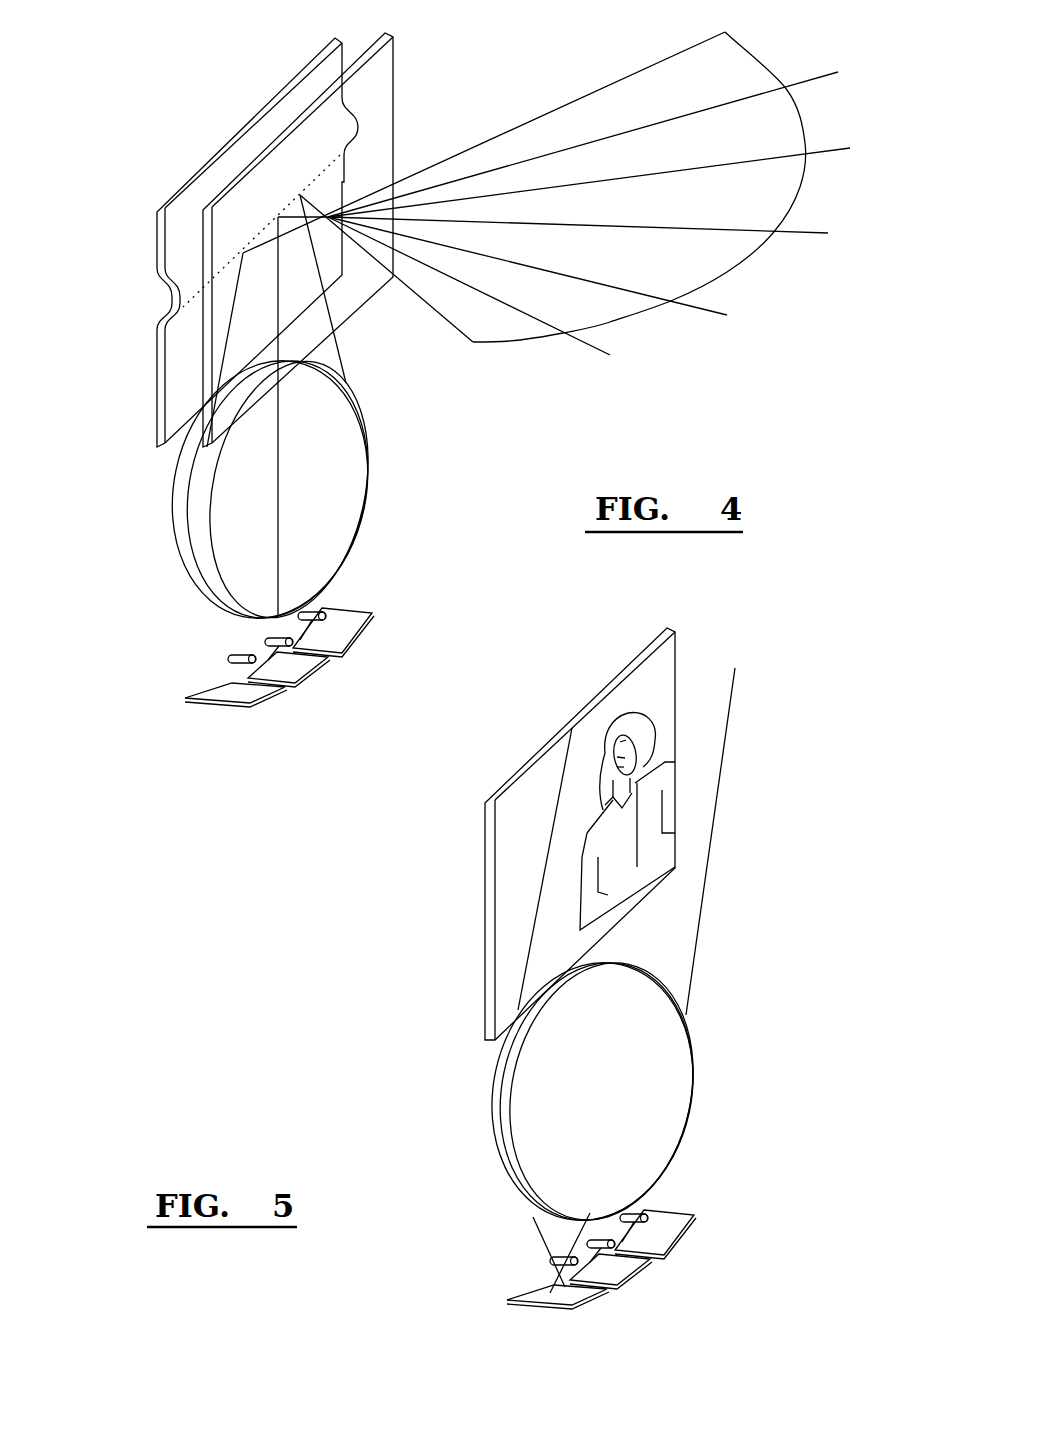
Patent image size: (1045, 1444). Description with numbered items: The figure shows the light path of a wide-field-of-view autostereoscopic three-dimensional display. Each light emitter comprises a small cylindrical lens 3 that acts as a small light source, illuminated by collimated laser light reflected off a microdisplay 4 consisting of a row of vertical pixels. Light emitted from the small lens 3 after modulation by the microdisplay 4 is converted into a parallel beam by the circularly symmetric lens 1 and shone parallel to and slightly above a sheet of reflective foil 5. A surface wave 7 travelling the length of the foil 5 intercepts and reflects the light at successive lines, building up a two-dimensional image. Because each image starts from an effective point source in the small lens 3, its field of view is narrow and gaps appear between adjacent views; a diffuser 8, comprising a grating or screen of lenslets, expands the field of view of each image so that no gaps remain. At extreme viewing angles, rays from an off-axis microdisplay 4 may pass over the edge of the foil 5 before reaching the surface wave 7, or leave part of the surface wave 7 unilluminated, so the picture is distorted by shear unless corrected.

In FIG. 4, the circularly symmetric lens 1 is at (186, 528).
In FIG. 5, the circularly symmetric lens 1 is at (495, 1120).
In FIG. 4, the small cylindrical lens 3 is at (230, 660).
In FIG. 4, the microdisplay 4 is at (353, 640).
In FIG. 4, the sheet of reflective foil 5 is at (157, 250).
In FIG. 4, the surface wave 7 is at (162, 305).
In FIG. 4, the diffuser 8 is at (395, 112).